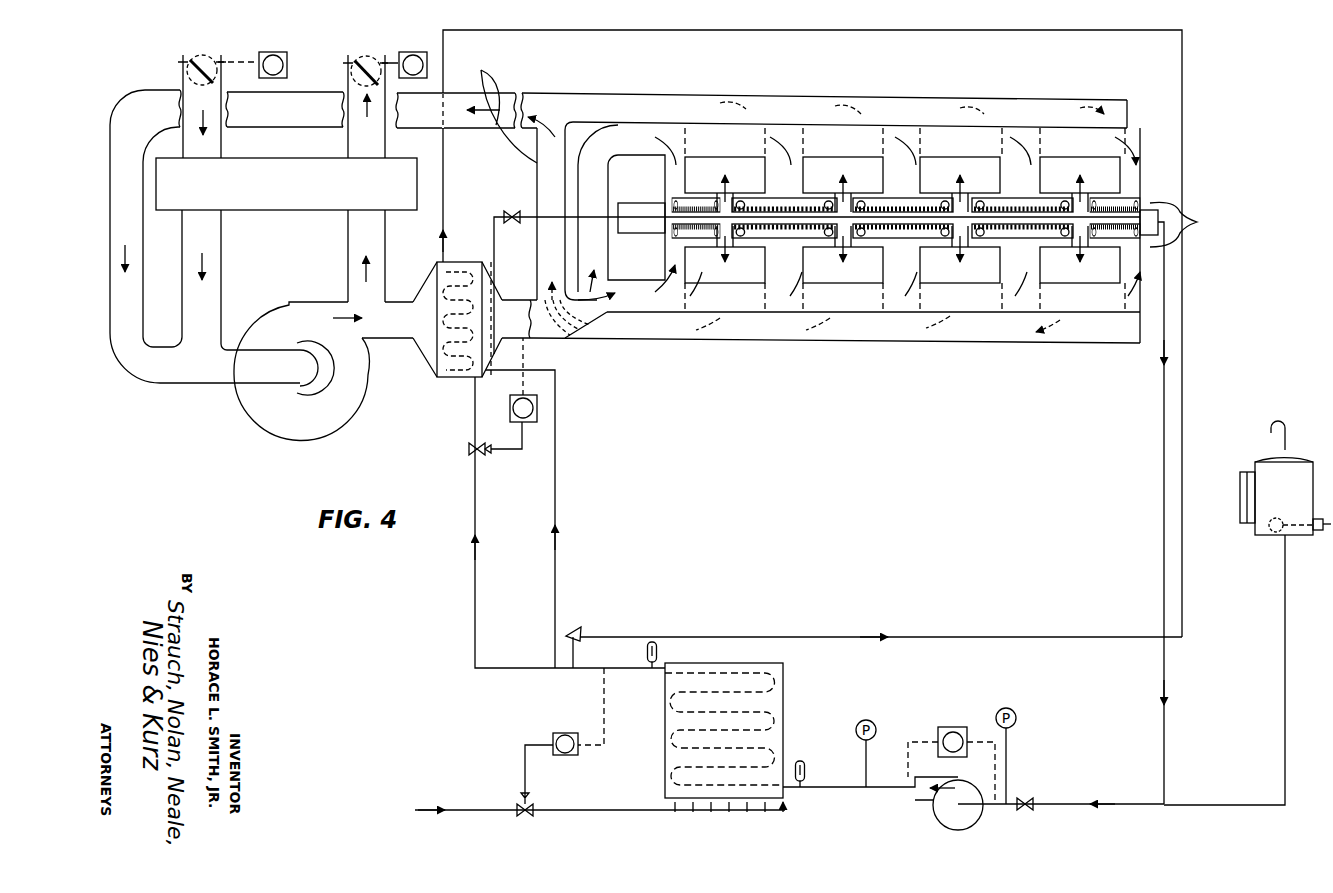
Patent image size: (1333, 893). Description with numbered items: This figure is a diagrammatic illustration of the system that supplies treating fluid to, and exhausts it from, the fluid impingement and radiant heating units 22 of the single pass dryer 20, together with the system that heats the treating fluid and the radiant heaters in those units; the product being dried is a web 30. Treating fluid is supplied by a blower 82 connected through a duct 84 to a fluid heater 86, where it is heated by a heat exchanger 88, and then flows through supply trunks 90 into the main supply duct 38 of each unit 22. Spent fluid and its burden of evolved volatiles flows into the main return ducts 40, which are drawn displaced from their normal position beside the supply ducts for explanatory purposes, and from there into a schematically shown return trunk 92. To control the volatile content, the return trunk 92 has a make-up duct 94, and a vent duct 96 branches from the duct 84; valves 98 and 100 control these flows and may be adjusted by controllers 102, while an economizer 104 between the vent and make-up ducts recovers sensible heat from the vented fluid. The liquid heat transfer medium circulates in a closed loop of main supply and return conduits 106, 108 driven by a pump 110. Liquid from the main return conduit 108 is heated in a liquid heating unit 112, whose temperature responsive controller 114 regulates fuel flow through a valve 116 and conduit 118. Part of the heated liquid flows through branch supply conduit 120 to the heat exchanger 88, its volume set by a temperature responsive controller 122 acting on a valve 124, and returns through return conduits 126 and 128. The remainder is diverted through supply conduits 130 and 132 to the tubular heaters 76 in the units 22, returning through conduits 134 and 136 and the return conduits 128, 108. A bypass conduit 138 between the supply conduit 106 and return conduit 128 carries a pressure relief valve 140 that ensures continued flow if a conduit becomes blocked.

The single pass dryer 20 is at (766, 83).
The fluid impingement and radiant heating unit 22 is at (962, 128).
The web 30 is at (1118, 216).
The main supply duct 38 is at (938, 118).
The main return duct 40 is at (645, 103).
The tubular type heater 76 is at (905, 197).
The blower 82 is at (352, 395).
The duct 84 is at (377, 335).
The fluid heater 86 is at (456, 380).
The heat exchanger 88 is at (463, 262).
The supply trunk 90 is at (585, 198).
The return trunk 92 is at (496, 177).
The make-up duct 94 is at (218, 142).
The vent duct 96 is at (348, 145).
The valve 98 is at (183, 68).
The valve 100 is at (352, 61).
The controller 102 is at (268, 52).
The economizer 104 is at (265, 202).
The main supply conduit 106 is at (622, 672).
The main return conduit 108 is at (1060, 804).
The pump 110 is at (970, 814).
The liquid heating unit 112 is at (786, 692).
The temperature responsive controller 114 is at (563, 733).
The valve 116 is at (532, 814).
The conduit 118 is at (642, 813).
The branch supply conduit 120 is at (475, 580).
The temperature responsive controller 122 is at (540, 408).
The valve 124 is at (492, 452).
The return conduit 126 is at (930, 31).
The return conduit 128 is at (1164, 726).
The supply conduit 130 is at (554, 451).
The supply conduit 132 is at (643, 233).
The conduit 134 is at (1188, 224).
The conduit 136 is at (1162, 441).
The bypass conduit 138 is at (960, 637).
The pressure relief valve 140 is at (572, 636).